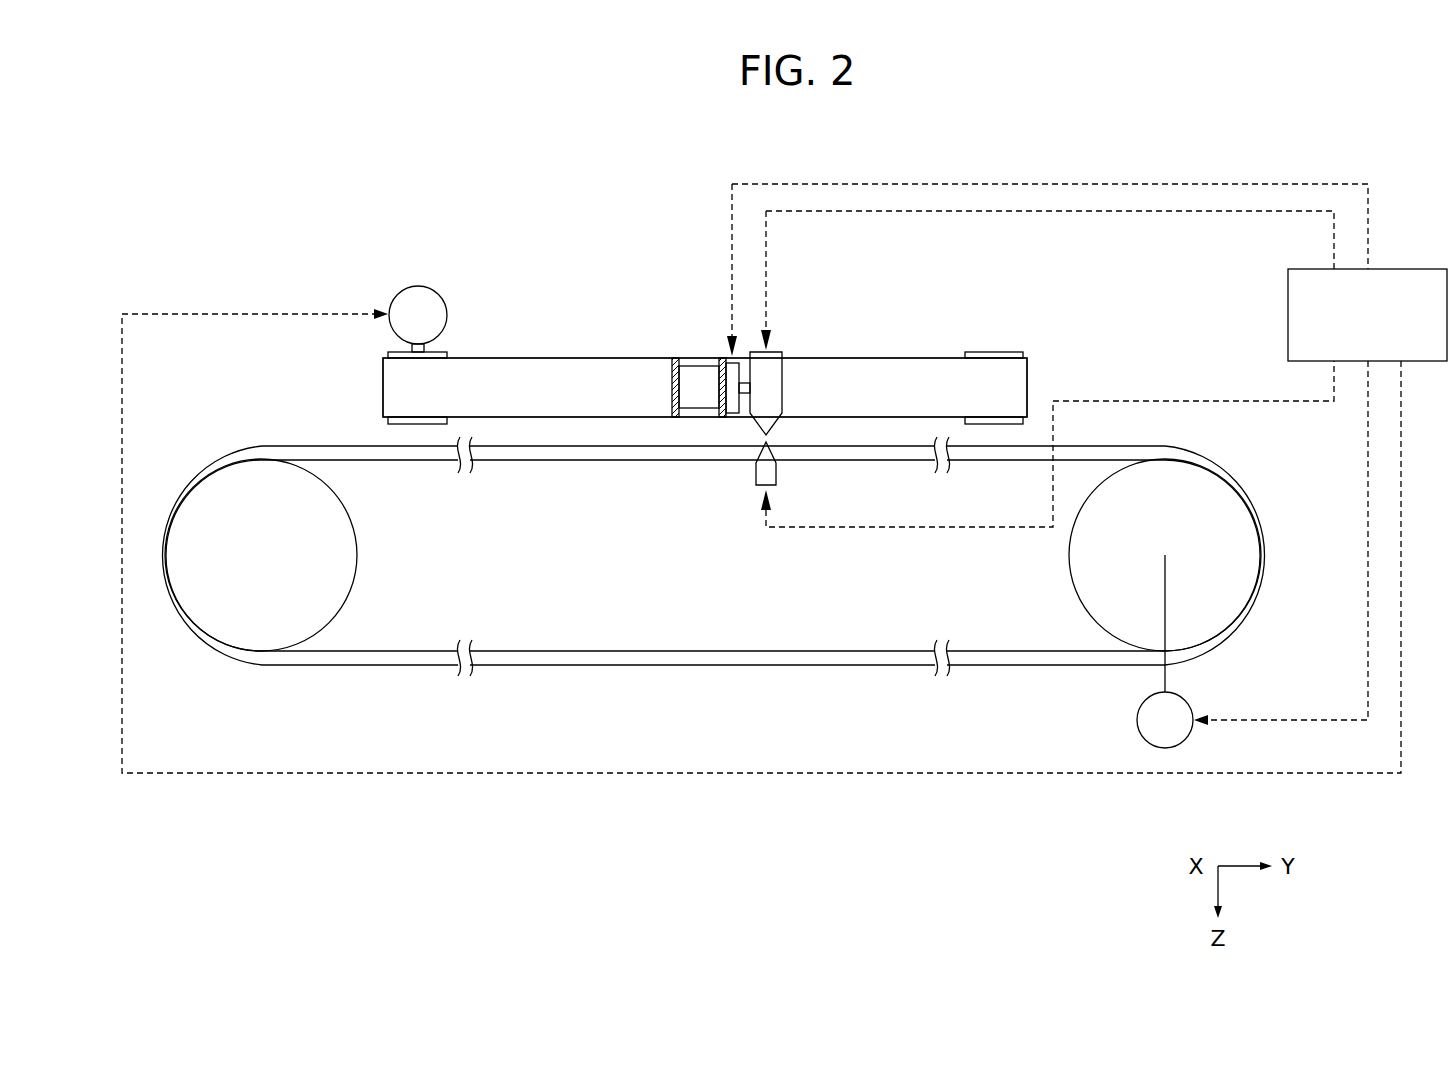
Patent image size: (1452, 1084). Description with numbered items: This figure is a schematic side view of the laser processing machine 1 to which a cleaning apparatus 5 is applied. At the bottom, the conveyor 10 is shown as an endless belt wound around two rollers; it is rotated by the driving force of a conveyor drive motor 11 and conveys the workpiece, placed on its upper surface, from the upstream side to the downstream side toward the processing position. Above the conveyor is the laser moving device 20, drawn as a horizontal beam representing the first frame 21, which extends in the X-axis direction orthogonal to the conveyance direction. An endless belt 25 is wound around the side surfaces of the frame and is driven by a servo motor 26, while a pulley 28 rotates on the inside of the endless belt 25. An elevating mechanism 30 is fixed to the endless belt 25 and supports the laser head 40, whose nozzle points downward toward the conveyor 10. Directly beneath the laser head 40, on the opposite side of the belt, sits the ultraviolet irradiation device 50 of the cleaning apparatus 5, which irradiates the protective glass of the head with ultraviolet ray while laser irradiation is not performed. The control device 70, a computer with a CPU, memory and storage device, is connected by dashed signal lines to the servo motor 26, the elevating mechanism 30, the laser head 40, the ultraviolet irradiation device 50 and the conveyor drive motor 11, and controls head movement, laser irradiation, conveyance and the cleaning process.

The laser processing machine 1 is at (464, 195).
The cleaning apparatus 5 is at (737, 513).
The conveyor 10 is at (653, 665).
The conveyor drive motor 11 is at (1137, 720).
The laser moving device 20 is at (896, 333).
The first frame 21 is at (695, 376).
The endless belt 25 is at (538, 370).
The servo motor 26 is at (418, 285).
The pulley 28 is at (990, 352).
The elevating mechanism 30 is at (730, 385).
The laser head 40 is at (775, 385).
The ultraviolet irradiation device 50 is at (748, 470).
The control device 70 is at (1402, 269).